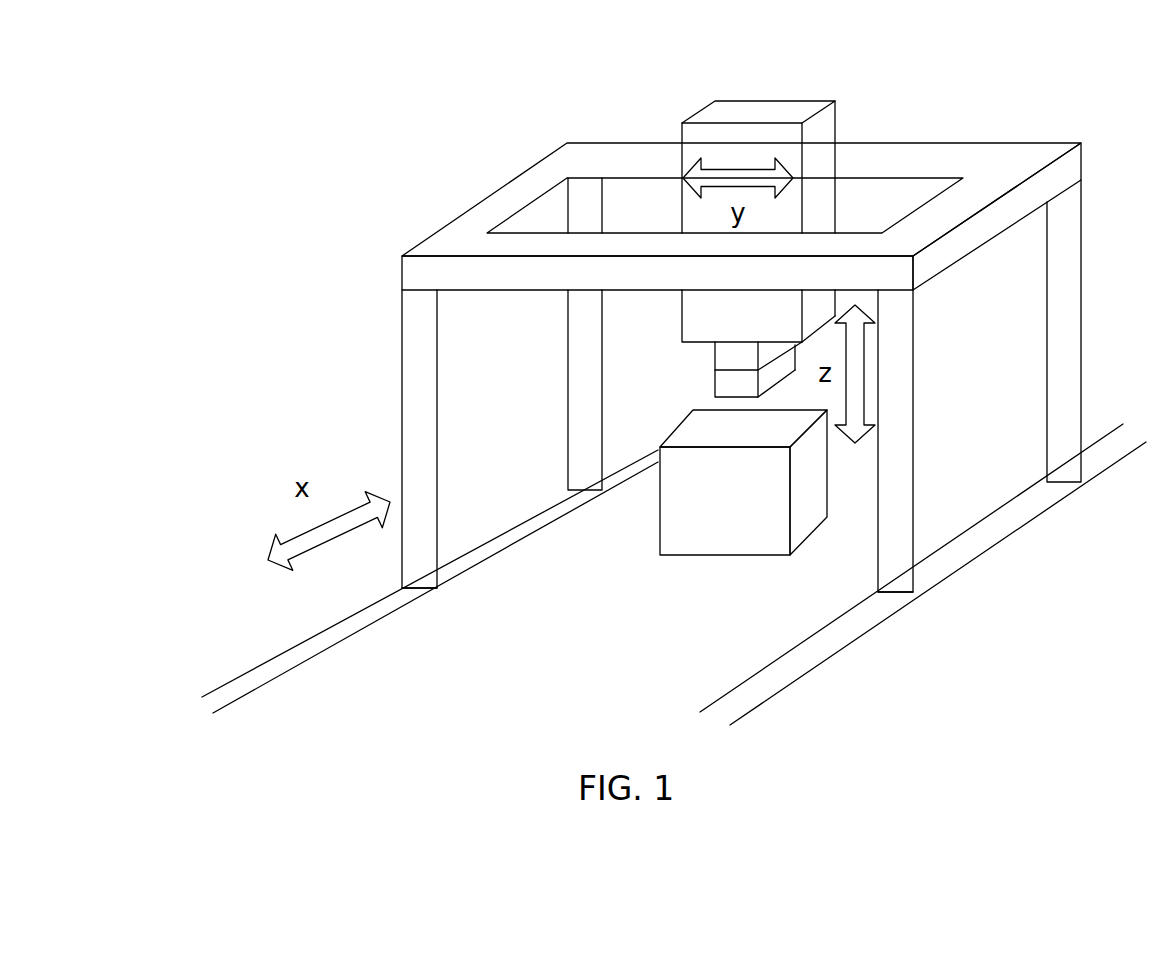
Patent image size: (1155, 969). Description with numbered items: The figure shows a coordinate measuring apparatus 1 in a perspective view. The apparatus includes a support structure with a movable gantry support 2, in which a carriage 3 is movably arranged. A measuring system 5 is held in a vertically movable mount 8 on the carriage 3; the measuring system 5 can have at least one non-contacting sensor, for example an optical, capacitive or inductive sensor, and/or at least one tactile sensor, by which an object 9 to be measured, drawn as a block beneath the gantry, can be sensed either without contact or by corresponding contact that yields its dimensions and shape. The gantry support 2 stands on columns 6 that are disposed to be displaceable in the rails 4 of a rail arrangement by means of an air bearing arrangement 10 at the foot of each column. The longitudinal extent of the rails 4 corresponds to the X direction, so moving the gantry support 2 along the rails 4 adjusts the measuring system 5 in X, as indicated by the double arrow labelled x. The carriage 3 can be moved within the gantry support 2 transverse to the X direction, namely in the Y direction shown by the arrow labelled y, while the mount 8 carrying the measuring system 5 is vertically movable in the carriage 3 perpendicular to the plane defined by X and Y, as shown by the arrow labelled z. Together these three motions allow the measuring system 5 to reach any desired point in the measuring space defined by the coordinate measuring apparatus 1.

The coordinate measuring apparatus 1 is at (297, 302).
The gantry support 2 is at (510, 205).
The carriage 3 is at (757, 113).
The rails 4 is at (318, 648).
The measuring system 5 is at (737, 380).
The columns 6 is at (417, 433).
The mount 8 is at (715, 362).
The object to be measured 9 is at (715, 522).
The air bearing arrangement 10 is at (423, 588).